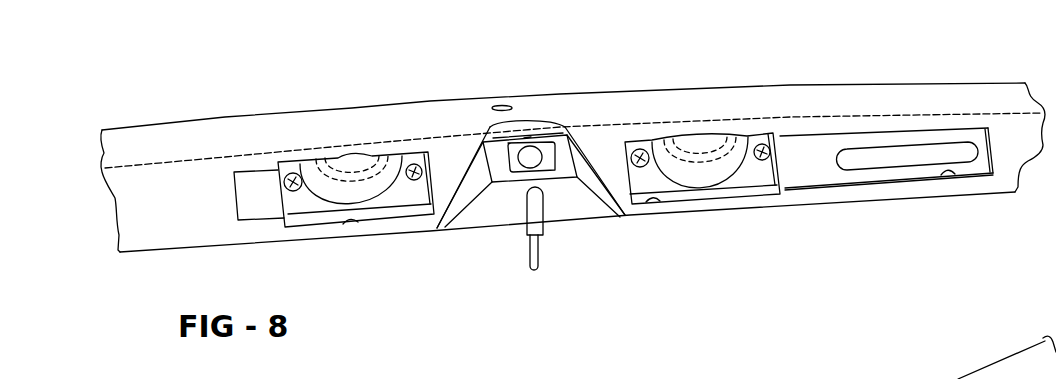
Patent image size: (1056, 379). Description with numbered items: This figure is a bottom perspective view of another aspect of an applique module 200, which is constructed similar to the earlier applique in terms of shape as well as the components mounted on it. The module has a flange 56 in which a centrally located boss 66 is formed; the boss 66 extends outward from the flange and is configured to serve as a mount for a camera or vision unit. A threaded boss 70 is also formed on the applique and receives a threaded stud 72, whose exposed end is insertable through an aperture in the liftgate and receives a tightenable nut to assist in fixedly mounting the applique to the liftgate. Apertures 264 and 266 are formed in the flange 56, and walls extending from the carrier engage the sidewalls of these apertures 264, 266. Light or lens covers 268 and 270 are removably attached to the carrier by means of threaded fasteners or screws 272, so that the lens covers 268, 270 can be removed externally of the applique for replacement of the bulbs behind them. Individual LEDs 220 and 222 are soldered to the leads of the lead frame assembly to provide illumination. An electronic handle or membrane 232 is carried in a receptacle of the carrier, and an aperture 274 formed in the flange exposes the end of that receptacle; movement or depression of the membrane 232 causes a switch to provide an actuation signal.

The applique module 200 is at (126, 97).
The flange 56 is at (192, 238).
The boss 66 is at (480, 222).
The boss 70 is at (545, 213).
The stud 72 is at (540, 265).
The LED 220 is at (808, 172).
The LED 222 is at (250, 210).
The electronic handle or membrane 232 is at (903, 165).
The aperture 264 is at (658, 202).
The aperture 266 is at (350, 225).
The lens cover 268 is at (702, 140).
The lens cover 270 is at (355, 158).
The screw 272 is at (288, 182).
The aperture 274 is at (950, 173).